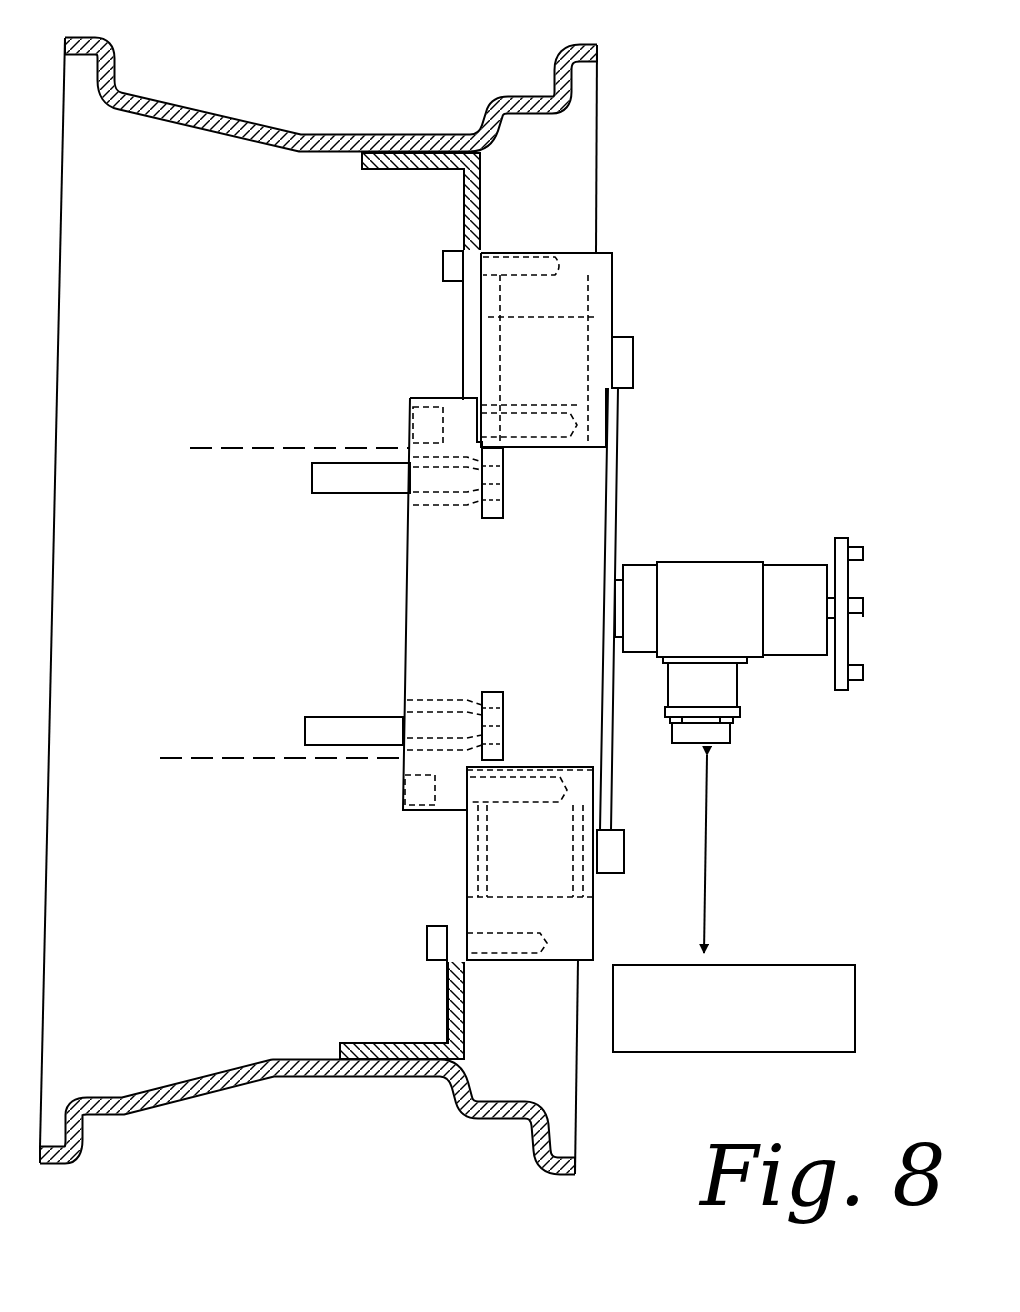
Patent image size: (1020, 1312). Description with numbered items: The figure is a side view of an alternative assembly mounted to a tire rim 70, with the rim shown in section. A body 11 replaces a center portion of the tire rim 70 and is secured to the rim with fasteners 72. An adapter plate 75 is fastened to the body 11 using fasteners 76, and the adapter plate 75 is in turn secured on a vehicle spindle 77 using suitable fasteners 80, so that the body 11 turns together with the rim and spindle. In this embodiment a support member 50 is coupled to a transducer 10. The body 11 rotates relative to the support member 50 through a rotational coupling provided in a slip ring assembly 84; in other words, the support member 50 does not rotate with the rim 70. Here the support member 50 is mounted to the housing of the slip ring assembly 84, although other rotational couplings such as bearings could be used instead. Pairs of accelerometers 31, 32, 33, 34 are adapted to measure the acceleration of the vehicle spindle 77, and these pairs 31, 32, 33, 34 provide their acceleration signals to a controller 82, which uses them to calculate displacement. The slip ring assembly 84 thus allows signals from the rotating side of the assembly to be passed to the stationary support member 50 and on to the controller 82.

The transducer 10 is at (645, 281).
The body 11 is at (612, 320).
The accelerometer pair 31 is at (867, 553).
The accelerometer pair 32 is at (863, 605).
The accelerometer pair 33 is at (867, 673).
The accelerometer pair 34 is at (872, 622).
The support member 50 is at (850, 578).
The tire rim 70 is at (590, 45).
The fasteners 72 is at (532, 250).
The adapter plate 75 is at (437, 398).
The fasteners 76 is at (420, 417).
The vehicle spindle 77 is at (243, 447).
The fasteners 80 is at (312, 477).
The controller 82 is at (747, 965).
The slip ring assembly 84 is at (705, 562).